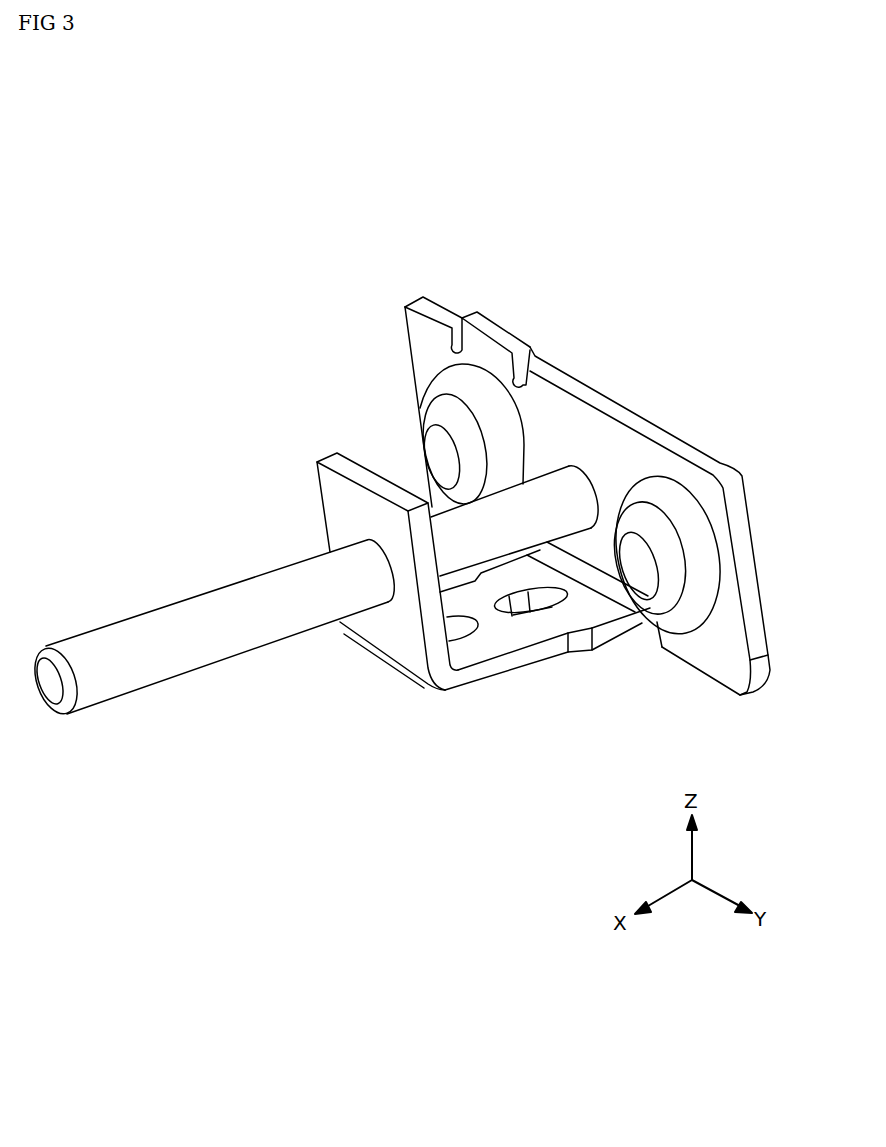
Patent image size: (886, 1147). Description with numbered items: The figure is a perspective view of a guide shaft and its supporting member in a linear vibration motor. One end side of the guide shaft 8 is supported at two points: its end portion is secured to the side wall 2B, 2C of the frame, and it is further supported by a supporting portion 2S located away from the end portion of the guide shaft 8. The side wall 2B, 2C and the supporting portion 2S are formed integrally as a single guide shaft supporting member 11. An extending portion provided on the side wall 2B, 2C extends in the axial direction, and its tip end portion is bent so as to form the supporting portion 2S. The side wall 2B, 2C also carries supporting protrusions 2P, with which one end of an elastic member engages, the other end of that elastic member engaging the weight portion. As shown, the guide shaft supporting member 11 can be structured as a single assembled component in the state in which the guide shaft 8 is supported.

The guide shaft 8 is at (210, 593).
The supporting portion 2S is at (326, 457).
The supporting protrusion 2P is at (432, 410).
The side wall 2B is at (559, 496).
The side wall 2C is at (559, 496).
The guide shaft supporting member 11 is at (469, 573).